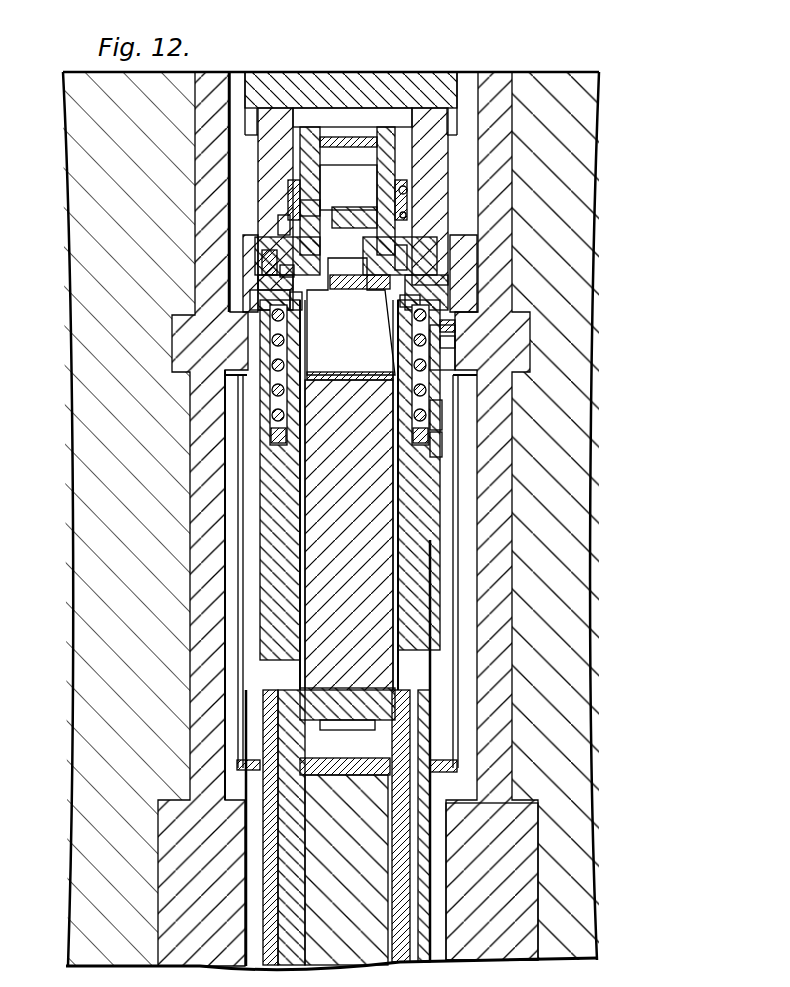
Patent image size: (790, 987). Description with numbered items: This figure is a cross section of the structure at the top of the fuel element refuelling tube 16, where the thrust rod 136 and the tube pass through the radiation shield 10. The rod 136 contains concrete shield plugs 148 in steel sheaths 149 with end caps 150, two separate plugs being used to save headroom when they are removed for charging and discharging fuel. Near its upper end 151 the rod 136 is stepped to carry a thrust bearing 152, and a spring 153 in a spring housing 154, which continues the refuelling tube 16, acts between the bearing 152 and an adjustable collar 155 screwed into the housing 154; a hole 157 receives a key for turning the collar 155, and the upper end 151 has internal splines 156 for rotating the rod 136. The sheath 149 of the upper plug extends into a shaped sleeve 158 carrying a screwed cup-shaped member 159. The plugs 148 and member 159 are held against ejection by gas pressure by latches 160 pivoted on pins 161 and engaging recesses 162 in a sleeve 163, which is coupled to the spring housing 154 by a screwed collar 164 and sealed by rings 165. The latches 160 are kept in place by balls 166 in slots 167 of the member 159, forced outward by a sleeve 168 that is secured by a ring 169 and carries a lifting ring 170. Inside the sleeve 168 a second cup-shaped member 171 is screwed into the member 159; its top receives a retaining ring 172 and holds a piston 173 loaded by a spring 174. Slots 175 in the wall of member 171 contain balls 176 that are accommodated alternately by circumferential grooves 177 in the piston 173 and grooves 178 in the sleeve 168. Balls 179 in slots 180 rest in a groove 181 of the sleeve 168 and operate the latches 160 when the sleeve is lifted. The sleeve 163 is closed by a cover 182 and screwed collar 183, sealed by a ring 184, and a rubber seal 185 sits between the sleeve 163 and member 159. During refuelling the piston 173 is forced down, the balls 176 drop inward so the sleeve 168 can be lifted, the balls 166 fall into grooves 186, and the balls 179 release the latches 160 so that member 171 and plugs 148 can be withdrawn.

The radiation shield 10 is at (560, 600).
The refuelling tube 16 is at (430, 948).
The thrust rod 136 is at (455, 522).
The concrete shield plug 148 is at (393, 460).
The steel sheath 149 is at (440, 500).
The end cap 150 is at (300, 432).
The upper end of thrust rod 151 is at (395, 455).
The thrust bearing 152 is at (430, 445).
The spring 153 is at (455, 350).
The spring housing 154 is at (430, 425).
The adjustable collar 155 is at (455, 330).
The internal splines 156 is at (455, 345).
The hole 157 is at (400, 292).
The shaped sleeve 158 is at (308, 357).
The cup-shaped member 159 is at (290, 297).
The latch 160 is at (407, 178).
The pin 161 is at (405, 235).
The recess 162 is at (293, 273).
The sleeve 163 is at (460, 125).
The screwed collar 164 is at (247, 292).
The sealing ring 165 is at (425, 295).
The ball 166 is at (407, 190).
The slot 167 is at (410, 215).
The sleeve 168 is at (400, 120).
The ring 169 is at (318, 150).
The lifting ring 170 is at (345, 180).
The second cup-shaped member 171 is at (342, 325).
The retaining ring 172 is at (385, 140).
The piston 173 is at (430, 160).
The spring 174 is at (440, 150).
The slot 175 is at (348, 519).
The ball 176 is at (290, 225).
The circumferential groove 177 is at (300, 210).
The groove 178 is at (290, 257).
The ball 179 is at (430, 255).
The slot 180 is at (440, 280).
The groove 181 is at (400, 250).
The cover 182 is at (440, 135).
The screwed collar 183 is at (455, 100).
The sealing ring 184 is at (278, 105).
The rubber seal 185 is at (310, 400).
The groove 186 is at (355, 298).